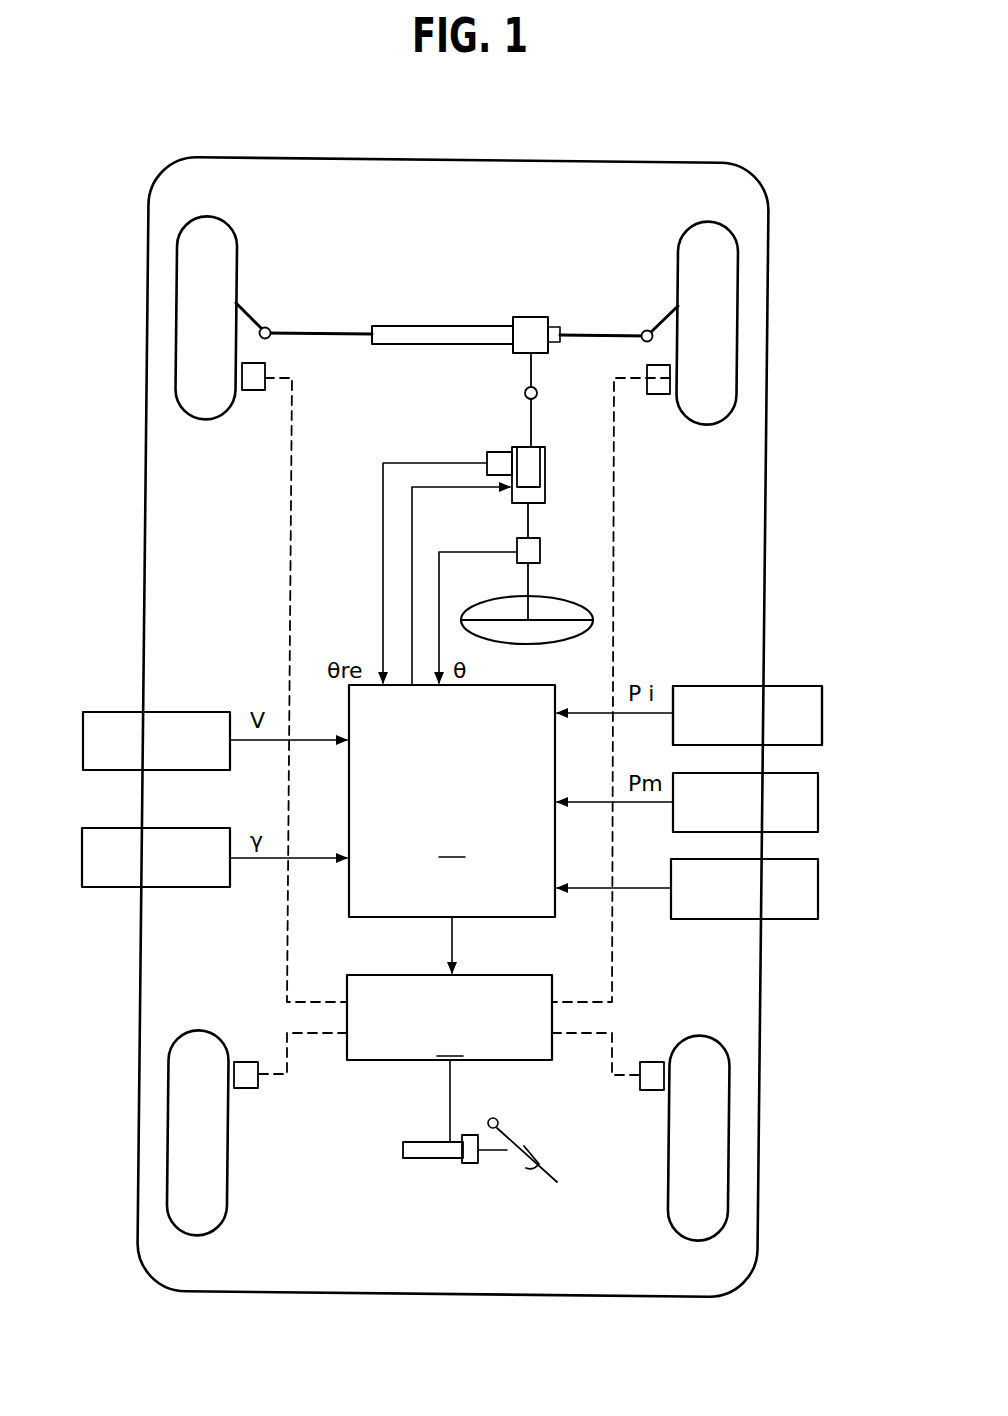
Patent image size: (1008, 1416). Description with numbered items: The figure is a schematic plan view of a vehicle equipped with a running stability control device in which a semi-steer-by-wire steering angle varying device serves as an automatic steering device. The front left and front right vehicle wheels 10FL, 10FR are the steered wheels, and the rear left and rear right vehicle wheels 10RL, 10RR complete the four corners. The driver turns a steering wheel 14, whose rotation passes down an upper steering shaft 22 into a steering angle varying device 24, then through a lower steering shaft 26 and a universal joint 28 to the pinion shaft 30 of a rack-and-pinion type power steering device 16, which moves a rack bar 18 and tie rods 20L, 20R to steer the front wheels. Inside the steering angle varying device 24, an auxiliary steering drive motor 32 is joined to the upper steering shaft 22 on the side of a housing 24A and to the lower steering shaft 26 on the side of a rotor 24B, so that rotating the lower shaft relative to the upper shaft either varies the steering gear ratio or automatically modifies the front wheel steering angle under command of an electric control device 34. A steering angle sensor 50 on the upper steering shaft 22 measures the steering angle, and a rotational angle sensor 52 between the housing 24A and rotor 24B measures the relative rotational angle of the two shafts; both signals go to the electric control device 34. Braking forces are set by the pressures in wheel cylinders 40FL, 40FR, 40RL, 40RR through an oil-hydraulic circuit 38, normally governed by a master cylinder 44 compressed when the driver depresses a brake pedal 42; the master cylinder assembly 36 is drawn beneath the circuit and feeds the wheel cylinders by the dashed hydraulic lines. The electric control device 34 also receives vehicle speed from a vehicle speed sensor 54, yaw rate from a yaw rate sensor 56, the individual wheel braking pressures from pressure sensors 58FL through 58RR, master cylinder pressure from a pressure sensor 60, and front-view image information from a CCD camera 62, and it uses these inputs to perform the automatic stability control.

The front left vehicle wheel 10FL is at (176, 333).
The front right vehicle wheel 10FR is at (737, 335).
The rear left vehicle wheel 10RL is at (169, 1144).
The rear right vehicle wheel 10RR is at (728, 1146).
The steering wheel 14 is at (532, 645).
The rack-and-pinion type power steering device 16 is at (500, 303).
The rack bar 18 is at (325, 330).
The left tie rod 20L is at (250, 316).
The right tie rod 20R is at (664, 308).
The upper steering shaft 22 is at (526, 580).
The steering angle varying device 24 is at (528, 495).
The housing 24A is at (550, 484).
The rotor 24B is at (532, 458).
The lower steering shaft 26 is at (531, 408).
The universal joint 28 is at (523, 393).
The pinion shaft 30 is at (533, 370).
The auxiliary steering drive motor 32 is at (522, 442).
The electric control device 34 is at (452, 801).
The master cylinder 36 is at (421, 1155).
The oil-hydraulic circuit 38 is at (449, 1017).
The front left wheel cylinder 40FL is at (252, 390).
The front right wheel cylinder 40FR is at (658, 394).
The rear left wheel cylinder 40RL is at (247, 1088).
The rear right wheel cylinder 40RR is at (652, 1090).
The brake pedal 42 is at (535, 1155).
The master cylinder 44 is at (428, 1142).
The steering angle sensor 50 is at (541, 550).
The rotational angle sensor 52 is at (505, 448).
The vehicle speed sensor 54 is at (173, 712).
The yaw rate sensor 56 is at (168, 887).
The pressure sensor 58FL is at (713, 686).
The pressure sensor 58RR is at (747, 683).
The pressure sensor 60 is at (818, 812).
The CCD camera 62 is at (712, 919).